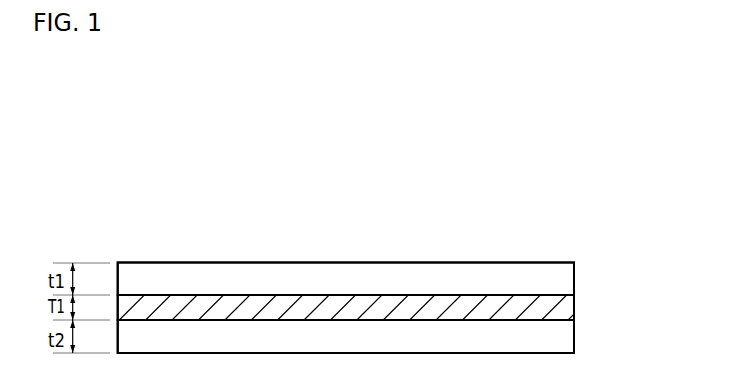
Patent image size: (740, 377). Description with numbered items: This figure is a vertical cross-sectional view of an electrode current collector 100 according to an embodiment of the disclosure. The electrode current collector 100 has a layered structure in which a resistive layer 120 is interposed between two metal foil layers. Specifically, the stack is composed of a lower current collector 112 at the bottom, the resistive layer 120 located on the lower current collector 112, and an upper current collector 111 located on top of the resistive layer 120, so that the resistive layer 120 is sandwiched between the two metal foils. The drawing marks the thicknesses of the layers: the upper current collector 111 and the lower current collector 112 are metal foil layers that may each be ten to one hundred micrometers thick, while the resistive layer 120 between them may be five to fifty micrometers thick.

The electrode current collector 100 is at (305, 180).
The upper current collector 111 is at (574, 268).
The resistive layer 120 is at (574, 305).
The lower current collector 112 is at (574, 346).